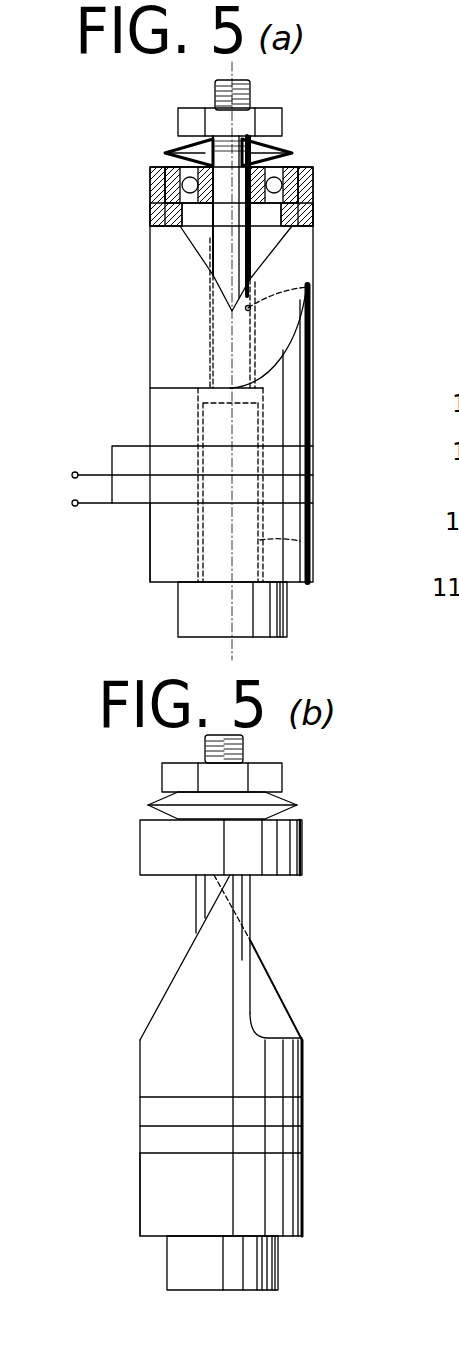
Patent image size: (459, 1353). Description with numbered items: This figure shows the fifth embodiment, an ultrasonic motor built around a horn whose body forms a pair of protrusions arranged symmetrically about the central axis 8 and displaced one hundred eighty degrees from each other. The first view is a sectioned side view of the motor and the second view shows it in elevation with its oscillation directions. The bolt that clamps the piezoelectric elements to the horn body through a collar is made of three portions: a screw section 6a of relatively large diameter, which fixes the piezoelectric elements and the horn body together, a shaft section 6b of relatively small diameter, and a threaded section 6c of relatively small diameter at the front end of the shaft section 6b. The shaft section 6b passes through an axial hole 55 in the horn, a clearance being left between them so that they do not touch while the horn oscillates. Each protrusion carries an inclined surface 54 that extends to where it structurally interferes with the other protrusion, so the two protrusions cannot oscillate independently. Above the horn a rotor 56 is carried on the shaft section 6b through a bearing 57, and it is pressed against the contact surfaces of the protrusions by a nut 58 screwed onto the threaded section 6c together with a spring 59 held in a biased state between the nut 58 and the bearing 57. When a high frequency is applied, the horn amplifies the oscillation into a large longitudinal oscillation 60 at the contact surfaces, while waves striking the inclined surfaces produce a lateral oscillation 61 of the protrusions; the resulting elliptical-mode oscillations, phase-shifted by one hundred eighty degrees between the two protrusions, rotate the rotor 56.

The screw section 6a is at (310, 545).
The shaft section 6b is at (223, 260).
The threaded section 6c is at (213, 93).
The central axis 8 is at (232, 648).
The inclined surface 54 is at (193, 239).
The axial hole 55 is at (310, 285).
The rotor 56 is at (303, 185).
The bearing 57 is at (293, 167).
The nut 58 is at (273, 118).
The spring 59 is at (175, 147).
The longitudinal oscillation 60 is at (315, 815).
The lateral oscillation 61 is at (172, 904).